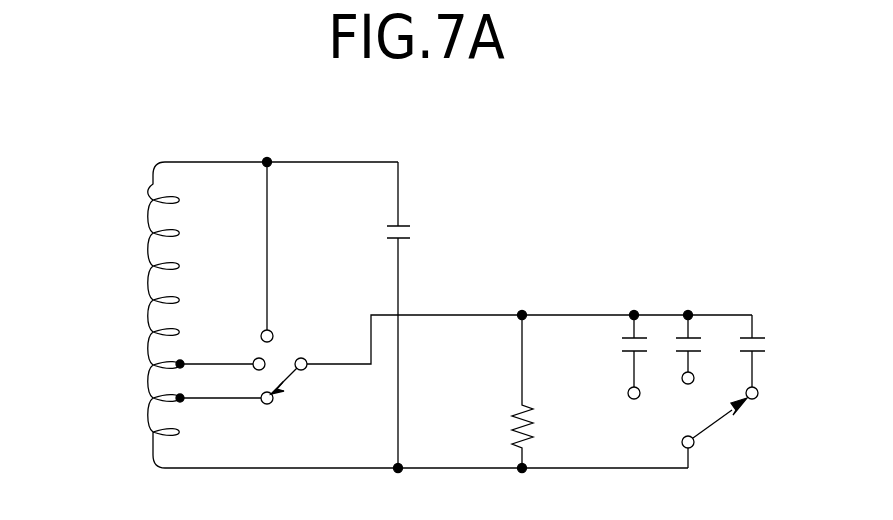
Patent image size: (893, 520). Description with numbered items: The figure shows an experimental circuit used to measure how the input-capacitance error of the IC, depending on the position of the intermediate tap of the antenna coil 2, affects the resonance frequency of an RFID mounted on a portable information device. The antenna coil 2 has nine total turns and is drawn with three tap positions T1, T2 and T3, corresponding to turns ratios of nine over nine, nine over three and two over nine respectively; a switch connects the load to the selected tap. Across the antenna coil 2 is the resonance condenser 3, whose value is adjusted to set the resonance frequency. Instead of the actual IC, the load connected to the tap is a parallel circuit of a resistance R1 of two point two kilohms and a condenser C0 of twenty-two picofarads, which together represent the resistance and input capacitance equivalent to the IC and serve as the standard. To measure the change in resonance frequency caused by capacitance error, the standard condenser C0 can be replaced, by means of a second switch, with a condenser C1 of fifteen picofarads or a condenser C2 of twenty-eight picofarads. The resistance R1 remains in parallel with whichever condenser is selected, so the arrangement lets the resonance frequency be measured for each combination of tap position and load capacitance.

The antenna coil 2 is at (153, 248).
The resonance condenser 3 is at (413, 231).
The tap position T1 is at (288, 321).
The tap position T2 is at (220, 348).
The tap position T3 is at (233, 418).
The resistance R1 is at (497, 391).
The condenser C1 is at (627, 336).
The condenser C0 is at (684, 329).
The condenser C2 is at (745, 336).